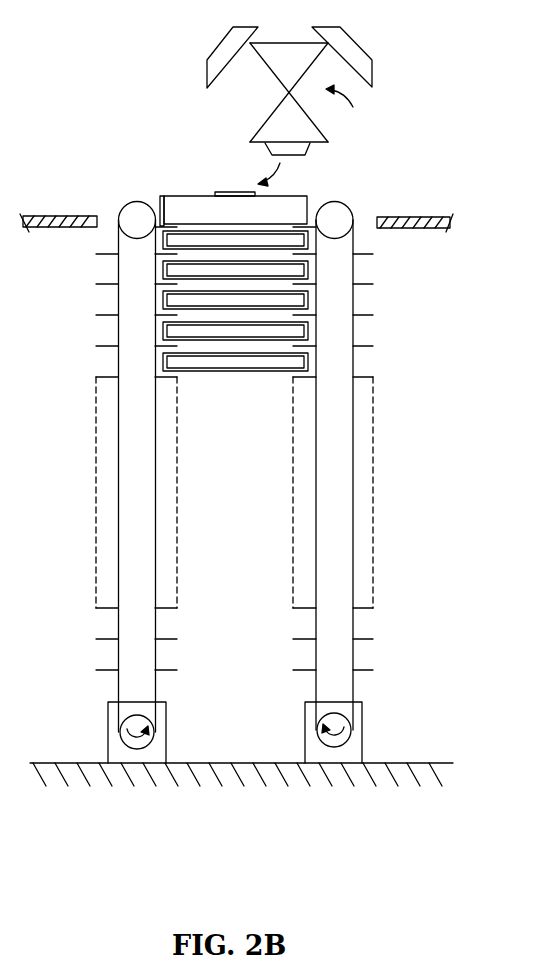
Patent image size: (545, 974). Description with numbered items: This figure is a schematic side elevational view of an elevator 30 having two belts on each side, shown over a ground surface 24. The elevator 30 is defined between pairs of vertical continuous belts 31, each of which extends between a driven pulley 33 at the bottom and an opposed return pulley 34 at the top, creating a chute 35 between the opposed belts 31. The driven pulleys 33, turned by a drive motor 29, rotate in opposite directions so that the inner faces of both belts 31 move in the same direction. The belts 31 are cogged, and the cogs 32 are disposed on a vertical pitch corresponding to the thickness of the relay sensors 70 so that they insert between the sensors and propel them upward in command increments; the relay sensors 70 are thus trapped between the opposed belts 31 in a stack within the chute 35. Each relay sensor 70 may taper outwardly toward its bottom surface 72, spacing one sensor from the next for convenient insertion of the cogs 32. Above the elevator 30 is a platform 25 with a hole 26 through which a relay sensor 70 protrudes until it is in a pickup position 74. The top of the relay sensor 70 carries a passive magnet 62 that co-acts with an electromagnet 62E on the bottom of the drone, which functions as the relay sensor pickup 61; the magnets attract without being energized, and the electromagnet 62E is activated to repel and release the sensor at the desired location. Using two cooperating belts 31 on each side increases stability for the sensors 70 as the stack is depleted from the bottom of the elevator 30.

The ground surface 24 is at (53, 778).
The platform 25 is at (65, 213).
The hole 26 is at (107, 220).
The drive motor 29 is at (115, 752).
The elevator 30 is at (220, 847).
The belt 31 is at (353, 537).
The cog 32 is at (365, 287).
The driven pulley 33 is at (125, 725).
The return pulley 34 is at (140, 217).
The chute 35 is at (227, 500).
The relay sensor pickup (RSP) 61 is at (278, 157).
The magnet 62 is at (235, 191).
The electromagnet 62E is at (298, 157).
The relay sensor 70 is at (225, 238).
The bottom surface 72 is at (253, 372).
The pickup position 74 is at (163, 220).